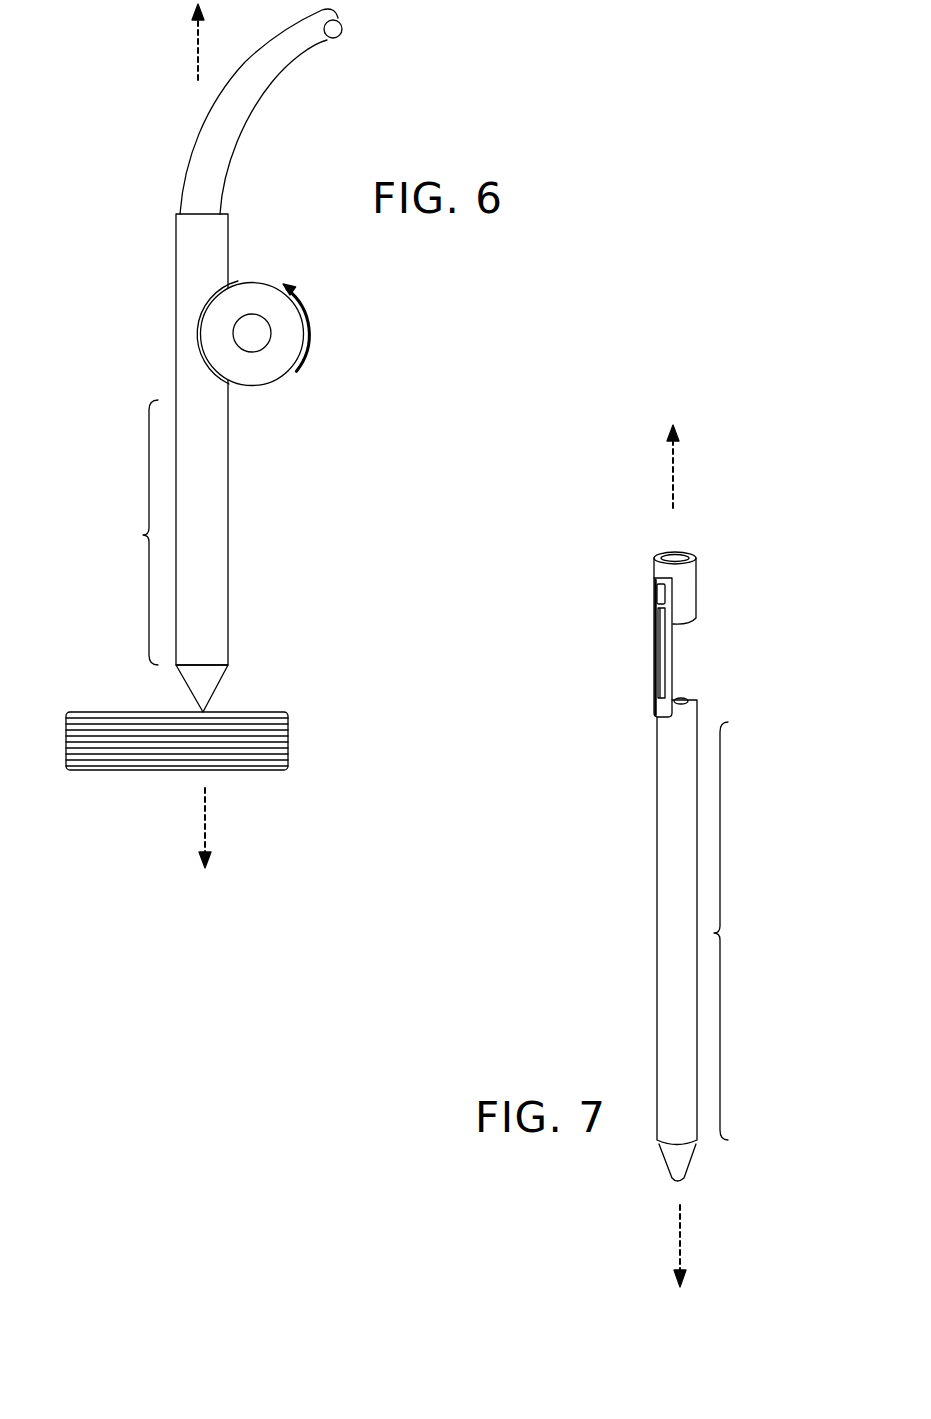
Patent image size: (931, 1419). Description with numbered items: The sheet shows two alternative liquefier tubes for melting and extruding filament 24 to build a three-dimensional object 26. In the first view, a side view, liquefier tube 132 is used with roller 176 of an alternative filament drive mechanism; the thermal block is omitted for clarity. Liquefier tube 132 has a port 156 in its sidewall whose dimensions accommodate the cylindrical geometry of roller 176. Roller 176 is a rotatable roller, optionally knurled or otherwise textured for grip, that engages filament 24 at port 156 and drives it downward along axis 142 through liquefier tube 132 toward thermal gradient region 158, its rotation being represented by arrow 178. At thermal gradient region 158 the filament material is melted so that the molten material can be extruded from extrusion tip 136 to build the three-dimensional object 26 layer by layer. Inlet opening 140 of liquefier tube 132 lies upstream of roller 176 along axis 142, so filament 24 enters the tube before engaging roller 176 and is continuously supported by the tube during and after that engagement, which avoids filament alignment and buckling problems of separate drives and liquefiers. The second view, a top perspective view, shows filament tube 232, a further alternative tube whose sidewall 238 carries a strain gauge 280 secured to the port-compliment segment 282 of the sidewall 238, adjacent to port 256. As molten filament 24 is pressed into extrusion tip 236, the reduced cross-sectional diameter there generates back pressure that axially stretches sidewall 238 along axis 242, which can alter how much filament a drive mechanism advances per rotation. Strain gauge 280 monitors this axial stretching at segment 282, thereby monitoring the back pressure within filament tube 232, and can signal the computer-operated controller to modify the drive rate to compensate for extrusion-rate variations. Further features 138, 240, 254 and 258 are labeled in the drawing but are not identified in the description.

In FIG. 6, the filament 24 is at (263, 76).
In FIG. 6, the 3D object 26 is at (112, 712).
In FIG. 6, the liquefier tube 132 is at (96, 459).
In FIG. 6, the extrusion tip 136 is at (222, 685).
In FIG. 6, the body 138 is at (222, 488).
In FIG. 6, the inlet opening 140 is at (186, 199).
In FIG. 6, the axis 142 is at (196, 52).
In FIG. 6, the port 156 is at (247, 273).
In FIG. 6, the thermal gradient region 158 is at (128, 532).
In FIG. 6, the roller 176 is at (274, 369).
In FIG. 6, the arrow 178 is at (314, 328).
In FIG. 7, the filament tube 232 is at (783, 812).
In FIG. 7, the extrusion tip 236 is at (689, 1161).
In FIG. 7, the sidewall 238 is at (658, 899).
In FIG. 7, the cap 240 is at (691, 545).
In FIG. 7, the axis 242 is at (672, 480).
In FIG. 7, the collar 254 is at (684, 697).
In FIG. 7, the port 256 is at (716, 648).
In FIG. 7, the body length 258 is at (743, 931).
In FIG. 7, the strain gauge 280 is at (660, 706).
In FIG. 7, the segment 282 is at (629, 633).